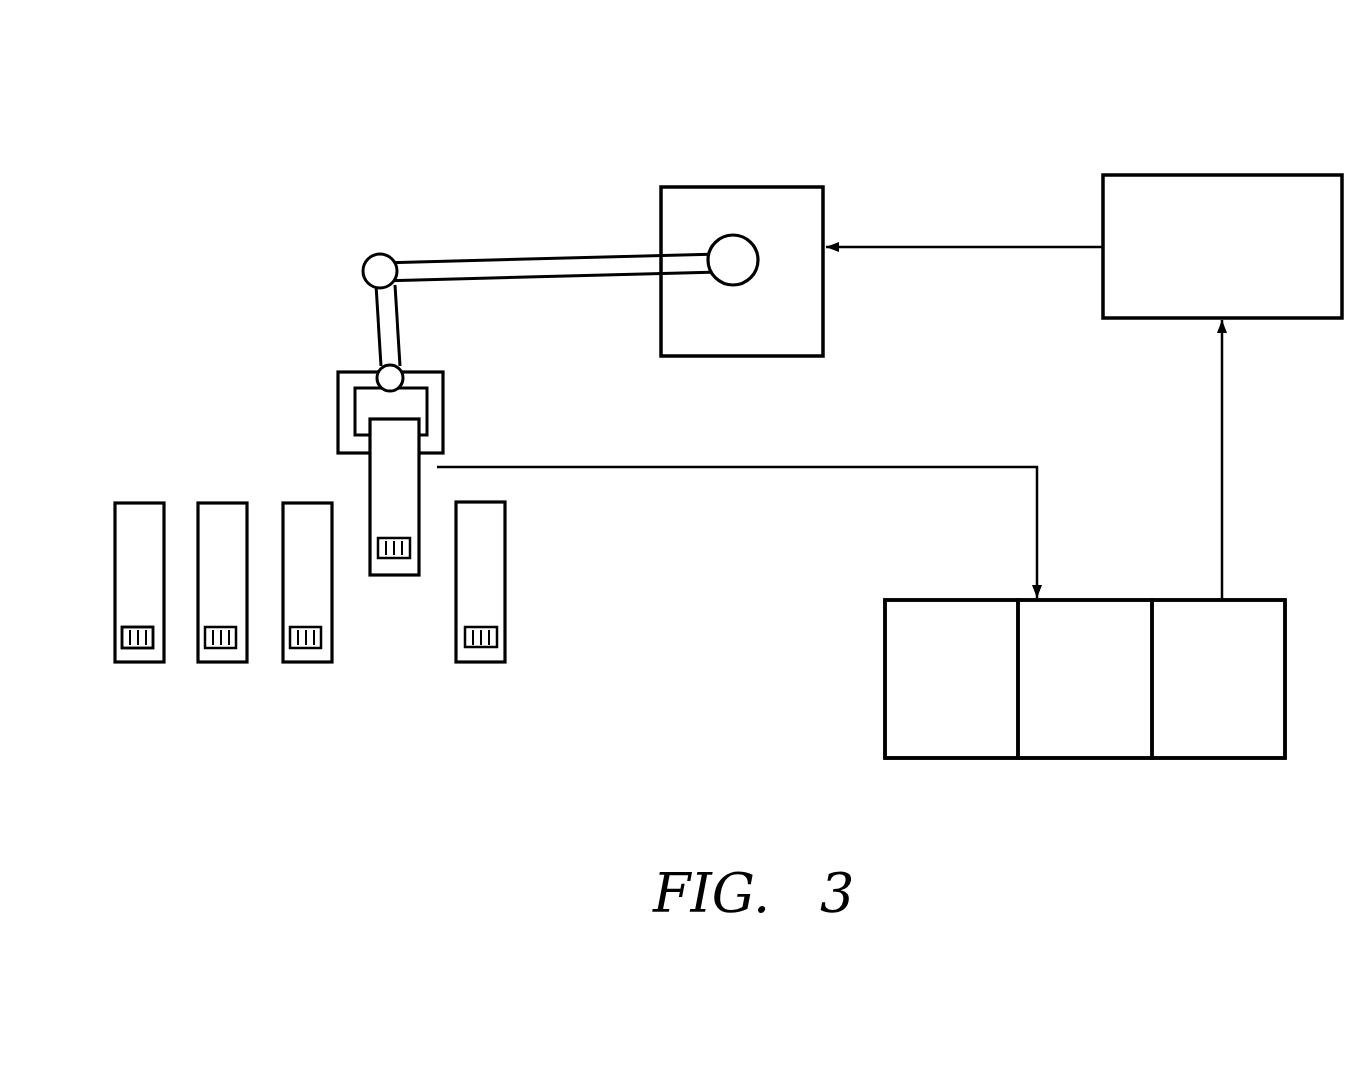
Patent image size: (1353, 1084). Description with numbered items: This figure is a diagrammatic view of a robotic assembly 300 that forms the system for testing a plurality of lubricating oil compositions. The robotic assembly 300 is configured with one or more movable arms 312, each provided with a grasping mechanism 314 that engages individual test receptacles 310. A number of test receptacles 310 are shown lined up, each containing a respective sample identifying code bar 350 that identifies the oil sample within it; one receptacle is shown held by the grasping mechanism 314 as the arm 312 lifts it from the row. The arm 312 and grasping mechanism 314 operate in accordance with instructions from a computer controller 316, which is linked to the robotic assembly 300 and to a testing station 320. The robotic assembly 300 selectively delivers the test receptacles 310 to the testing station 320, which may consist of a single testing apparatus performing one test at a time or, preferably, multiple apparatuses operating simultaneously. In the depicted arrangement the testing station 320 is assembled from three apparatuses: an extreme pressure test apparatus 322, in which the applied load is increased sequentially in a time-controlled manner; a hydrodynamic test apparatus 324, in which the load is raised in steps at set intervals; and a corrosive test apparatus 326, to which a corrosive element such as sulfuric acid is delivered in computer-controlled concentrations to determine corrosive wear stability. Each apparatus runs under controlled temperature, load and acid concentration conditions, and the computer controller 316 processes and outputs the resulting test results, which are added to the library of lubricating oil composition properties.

The robotic assembly 300 is at (408, 128).
The test receptacle 310 is at (505, 565).
The movable arm 312 is at (553, 258).
The grasping mechanism 314 is at (353, 370).
The computer controller 316 is at (1255, 268).
The testing station 320 is at (922, 580).
The extreme pressure test apparatus 322 is at (983, 702).
The hydrodynamic test apparatus 324 is at (1116, 702).
The corrosive test apparatus 326 is at (1250, 702).
The sample identifying code bar 350 is at (138, 648).